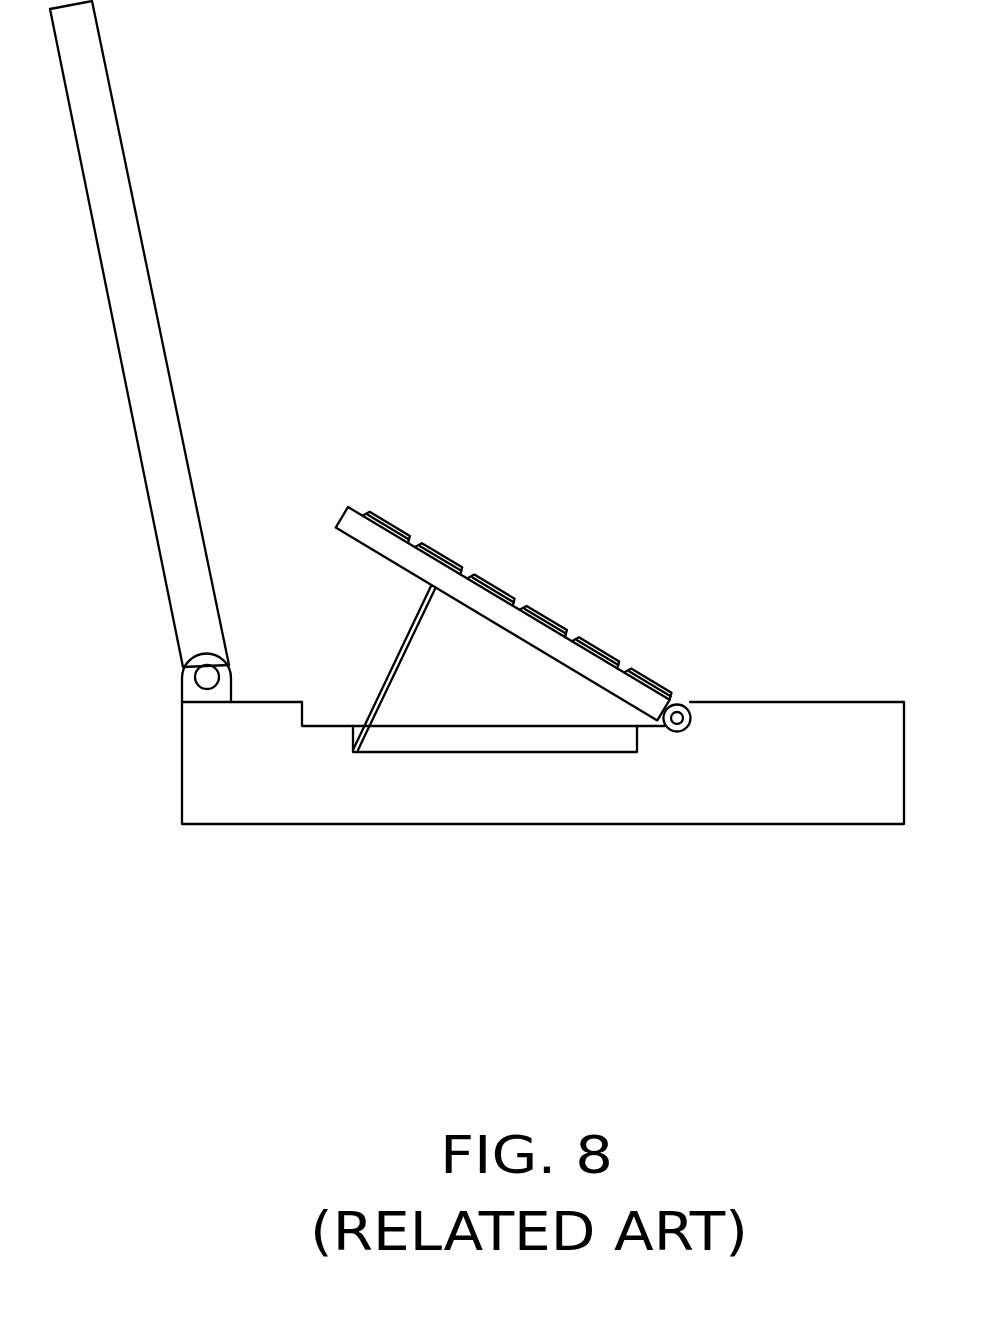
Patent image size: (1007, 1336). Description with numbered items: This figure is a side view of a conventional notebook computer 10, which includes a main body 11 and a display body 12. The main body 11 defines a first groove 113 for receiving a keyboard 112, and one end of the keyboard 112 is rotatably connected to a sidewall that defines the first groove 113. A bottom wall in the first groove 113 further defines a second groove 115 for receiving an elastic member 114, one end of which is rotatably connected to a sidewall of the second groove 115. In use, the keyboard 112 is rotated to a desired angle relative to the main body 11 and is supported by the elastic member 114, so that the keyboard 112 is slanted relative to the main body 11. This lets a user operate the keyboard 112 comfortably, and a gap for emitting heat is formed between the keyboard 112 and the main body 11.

The notebook computer 10 is at (443, 297).
The main body 11 is at (767, 802).
The display body 12 is at (98, 127).
The keyboard 112 is at (447, 580).
The first groove 113 is at (318, 715).
The elastic member 114 is at (410, 637).
The second groove 115 is at (551, 738).